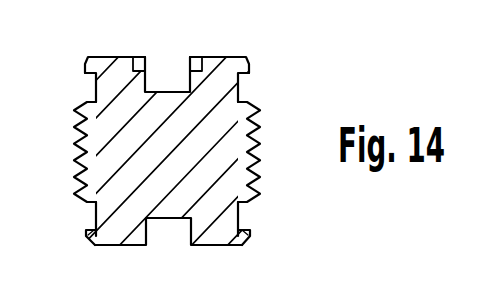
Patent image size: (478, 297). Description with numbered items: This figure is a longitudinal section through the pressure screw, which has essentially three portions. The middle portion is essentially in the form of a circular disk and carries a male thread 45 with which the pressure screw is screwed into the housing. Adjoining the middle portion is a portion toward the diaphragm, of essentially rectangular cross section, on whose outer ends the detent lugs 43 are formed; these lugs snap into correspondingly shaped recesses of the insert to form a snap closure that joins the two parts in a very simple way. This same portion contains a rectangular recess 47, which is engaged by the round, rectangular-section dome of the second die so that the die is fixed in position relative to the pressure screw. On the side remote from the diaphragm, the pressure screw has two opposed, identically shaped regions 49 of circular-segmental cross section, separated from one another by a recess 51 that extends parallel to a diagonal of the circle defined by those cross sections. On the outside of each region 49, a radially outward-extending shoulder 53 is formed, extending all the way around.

The detent lugs 43 is at (86, 233).
The male thread 45 is at (75, 138).
The recess 47 is at (173, 222).
The regions of circular-segmental cross section 49 is at (96, 88).
The recess 51 is at (169, 85).
The shoulder 53 is at (87, 63).